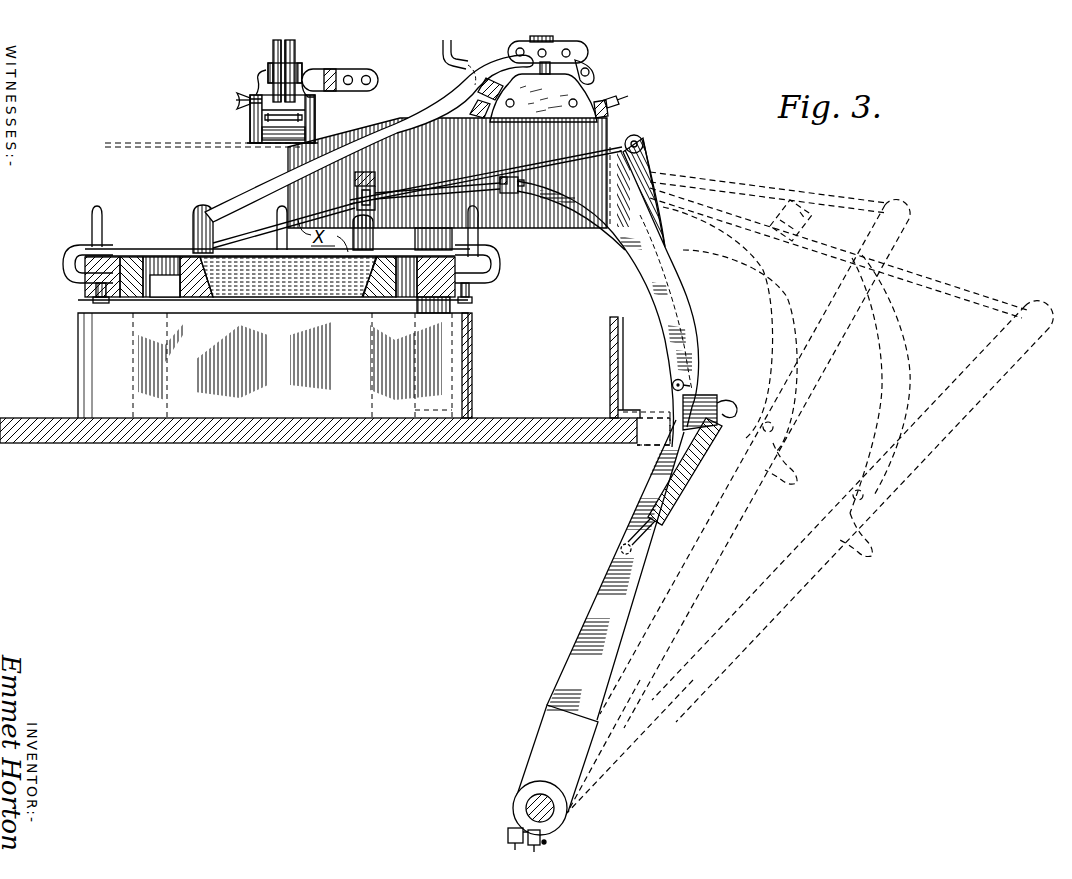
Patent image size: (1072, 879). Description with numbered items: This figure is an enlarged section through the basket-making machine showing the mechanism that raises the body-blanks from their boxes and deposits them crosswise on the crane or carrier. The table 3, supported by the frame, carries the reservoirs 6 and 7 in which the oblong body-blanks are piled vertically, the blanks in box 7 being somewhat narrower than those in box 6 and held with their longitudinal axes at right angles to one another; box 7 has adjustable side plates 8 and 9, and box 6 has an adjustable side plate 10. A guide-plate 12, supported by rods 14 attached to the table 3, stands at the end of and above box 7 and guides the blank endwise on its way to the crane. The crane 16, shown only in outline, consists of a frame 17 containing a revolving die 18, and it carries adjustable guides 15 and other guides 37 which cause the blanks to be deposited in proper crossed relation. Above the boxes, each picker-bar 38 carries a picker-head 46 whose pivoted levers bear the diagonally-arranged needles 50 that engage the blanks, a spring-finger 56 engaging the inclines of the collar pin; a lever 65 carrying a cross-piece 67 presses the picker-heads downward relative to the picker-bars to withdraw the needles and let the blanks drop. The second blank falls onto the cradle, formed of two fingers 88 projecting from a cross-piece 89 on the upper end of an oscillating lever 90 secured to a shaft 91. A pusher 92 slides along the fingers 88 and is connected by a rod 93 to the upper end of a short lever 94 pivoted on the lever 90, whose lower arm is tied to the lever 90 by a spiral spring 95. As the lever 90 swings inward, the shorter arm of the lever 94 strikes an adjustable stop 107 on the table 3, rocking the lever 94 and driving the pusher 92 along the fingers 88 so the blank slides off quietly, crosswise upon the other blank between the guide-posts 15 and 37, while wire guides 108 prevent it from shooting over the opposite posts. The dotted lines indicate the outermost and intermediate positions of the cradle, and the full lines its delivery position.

The table 3 is at (350, 440).
The reservoir 6 is at (290, 361).
The reservoir 7 is at (552, 367).
The adjustable side plate 8 is at (612, 330).
The adjustable side plate 9 is at (473, 387).
The adjustable side plate 10 is at (113, 340).
The guide-plate 12 is at (563, 215).
The rod 14 is at (450, 310).
The adjustable guide 15 is at (90, 218).
The crane 16 is at (274, 262).
The frame 17 is at (85, 290).
The die 18 is at (190, 257).
The guide 37 is at (195, 215).
The picker-bar 38 is at (296, 50).
The picker-head 46 is at (252, 118).
The needle 50 is at (318, 115).
The spring-finger 56 is at (255, 72).
The lever 65 is at (338, 70).
The cross-piece 67 is at (412, 78).
The finger 88 is at (488, 195).
The cross-piece 89 is at (518, 194).
The oscillating lever 90 is at (632, 500).
The shaft 91 is at (528, 798).
The pusher 92 is at (352, 188).
The rod 93 is at (623, 139).
The lever 94 is at (644, 148).
The spiral spring 95 is at (687, 468).
The adjustable stop 107 is at (637, 413).
The wire guide 108 is at (280, 181).